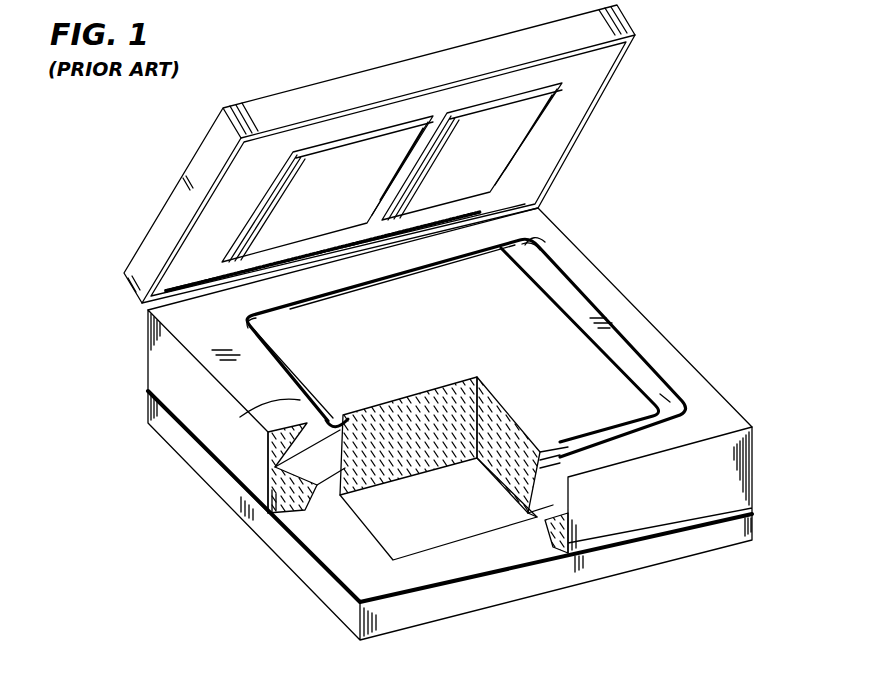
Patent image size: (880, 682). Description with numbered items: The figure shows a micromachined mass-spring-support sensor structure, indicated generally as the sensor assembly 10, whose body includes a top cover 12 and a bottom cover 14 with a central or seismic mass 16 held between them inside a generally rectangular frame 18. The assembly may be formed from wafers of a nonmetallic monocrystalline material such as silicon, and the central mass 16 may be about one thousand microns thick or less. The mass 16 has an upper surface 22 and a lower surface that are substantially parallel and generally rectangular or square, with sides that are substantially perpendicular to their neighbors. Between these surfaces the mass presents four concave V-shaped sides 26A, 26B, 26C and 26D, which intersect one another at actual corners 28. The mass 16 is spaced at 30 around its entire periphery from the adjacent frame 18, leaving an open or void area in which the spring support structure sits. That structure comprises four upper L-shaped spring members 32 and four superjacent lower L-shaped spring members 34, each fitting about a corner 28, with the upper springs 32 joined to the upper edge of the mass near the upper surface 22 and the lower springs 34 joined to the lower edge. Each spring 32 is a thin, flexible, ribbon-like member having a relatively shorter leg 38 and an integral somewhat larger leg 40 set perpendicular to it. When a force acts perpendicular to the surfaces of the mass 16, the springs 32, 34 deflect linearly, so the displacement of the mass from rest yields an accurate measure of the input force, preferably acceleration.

The sensor assembly 10 is at (647, 246).
The top cover 12 is at (568, 93).
The bottom cover 14 is at (367, 600).
The central mass 16 is at (587, 318).
The frame 18 is at (208, 352).
The upper surface 22 is at (462, 338).
The side 26A is at (633, 333).
The side 26B is at (367, 297).
The side 26C is at (257, 413).
The side 26D is at (587, 457).
The corner 28 is at (528, 260).
The space 30 is at (540, 237).
The upper L-shaped spring member 32 is at (647, 378).
The lower L-shaped spring member 34 is at (322, 485).
The shorter leg 38 is at (665, 397).
The larger leg 40 is at (560, 455).